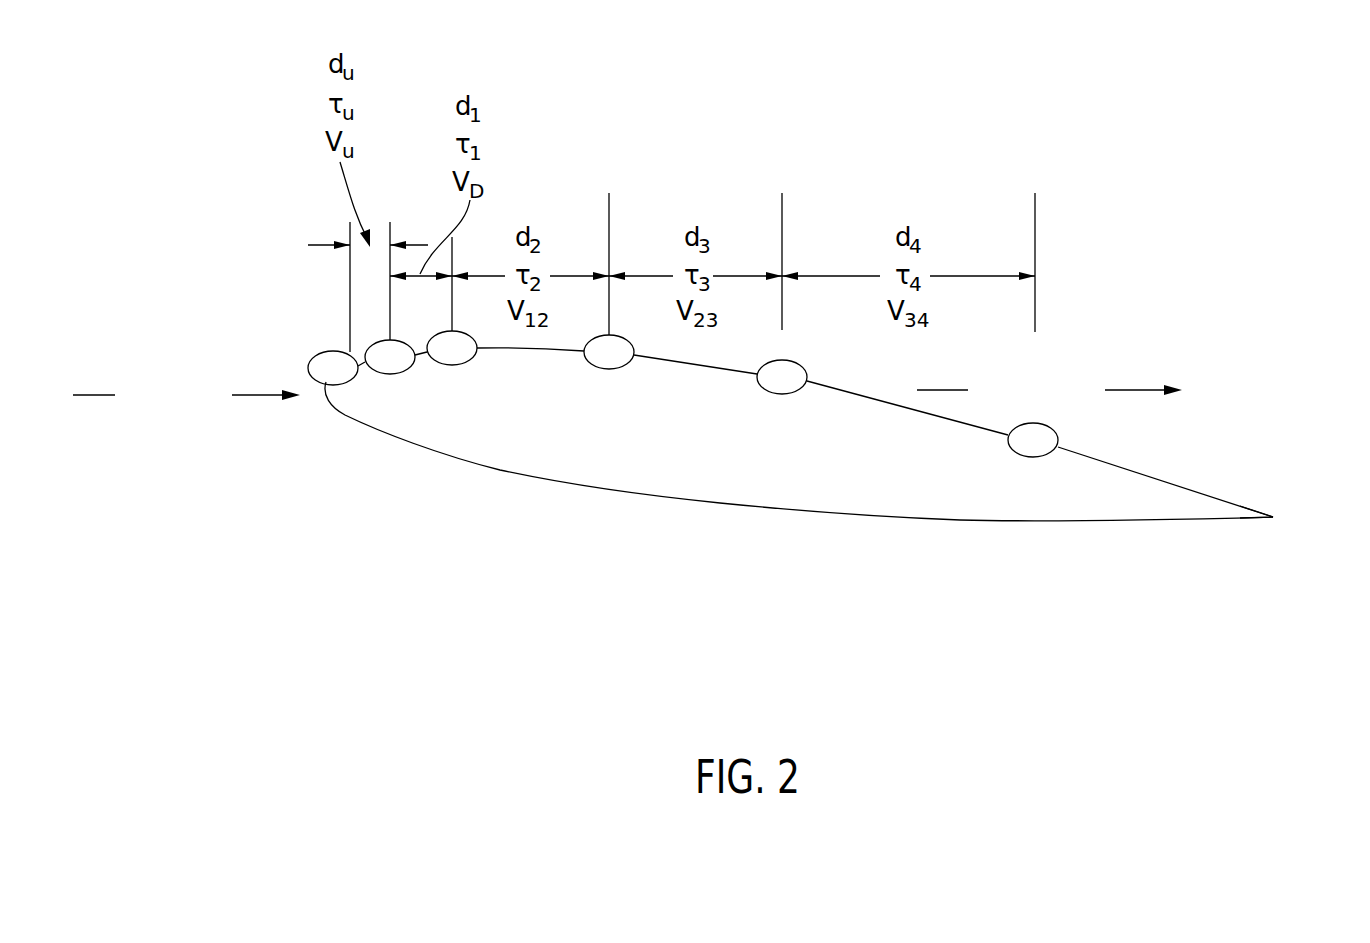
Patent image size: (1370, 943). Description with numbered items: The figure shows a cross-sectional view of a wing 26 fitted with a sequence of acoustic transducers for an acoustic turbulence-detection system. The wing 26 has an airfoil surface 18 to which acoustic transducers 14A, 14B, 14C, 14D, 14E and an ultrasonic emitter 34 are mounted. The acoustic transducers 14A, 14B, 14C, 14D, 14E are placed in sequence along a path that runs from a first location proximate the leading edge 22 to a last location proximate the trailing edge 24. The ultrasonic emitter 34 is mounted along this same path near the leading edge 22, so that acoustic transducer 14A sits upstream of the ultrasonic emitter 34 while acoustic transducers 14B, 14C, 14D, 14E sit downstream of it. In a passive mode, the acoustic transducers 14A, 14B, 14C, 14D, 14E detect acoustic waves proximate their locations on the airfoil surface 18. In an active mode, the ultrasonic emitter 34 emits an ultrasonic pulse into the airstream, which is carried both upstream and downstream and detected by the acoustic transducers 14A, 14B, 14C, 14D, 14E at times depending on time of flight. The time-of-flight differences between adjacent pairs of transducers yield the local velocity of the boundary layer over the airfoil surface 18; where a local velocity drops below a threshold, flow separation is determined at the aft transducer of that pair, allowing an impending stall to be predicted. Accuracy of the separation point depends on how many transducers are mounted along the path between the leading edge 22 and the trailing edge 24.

The acoustic transducer 14A is at (350, 384).
The acoustic transducer 14B is at (467, 361).
The acoustic transducer 14C is at (612, 369).
The acoustic transducer 14D is at (787, 394).
The acoustic transducer 14E is at (1035, 457).
The ultrasonic emitter 34 is at (398, 374).
The airfoil surface 18 is at (1197, 488).
The leading edge 22 is at (290, 434).
The trailing edge 24 is at (1296, 517).
The wing 26 is at (1125, 320).